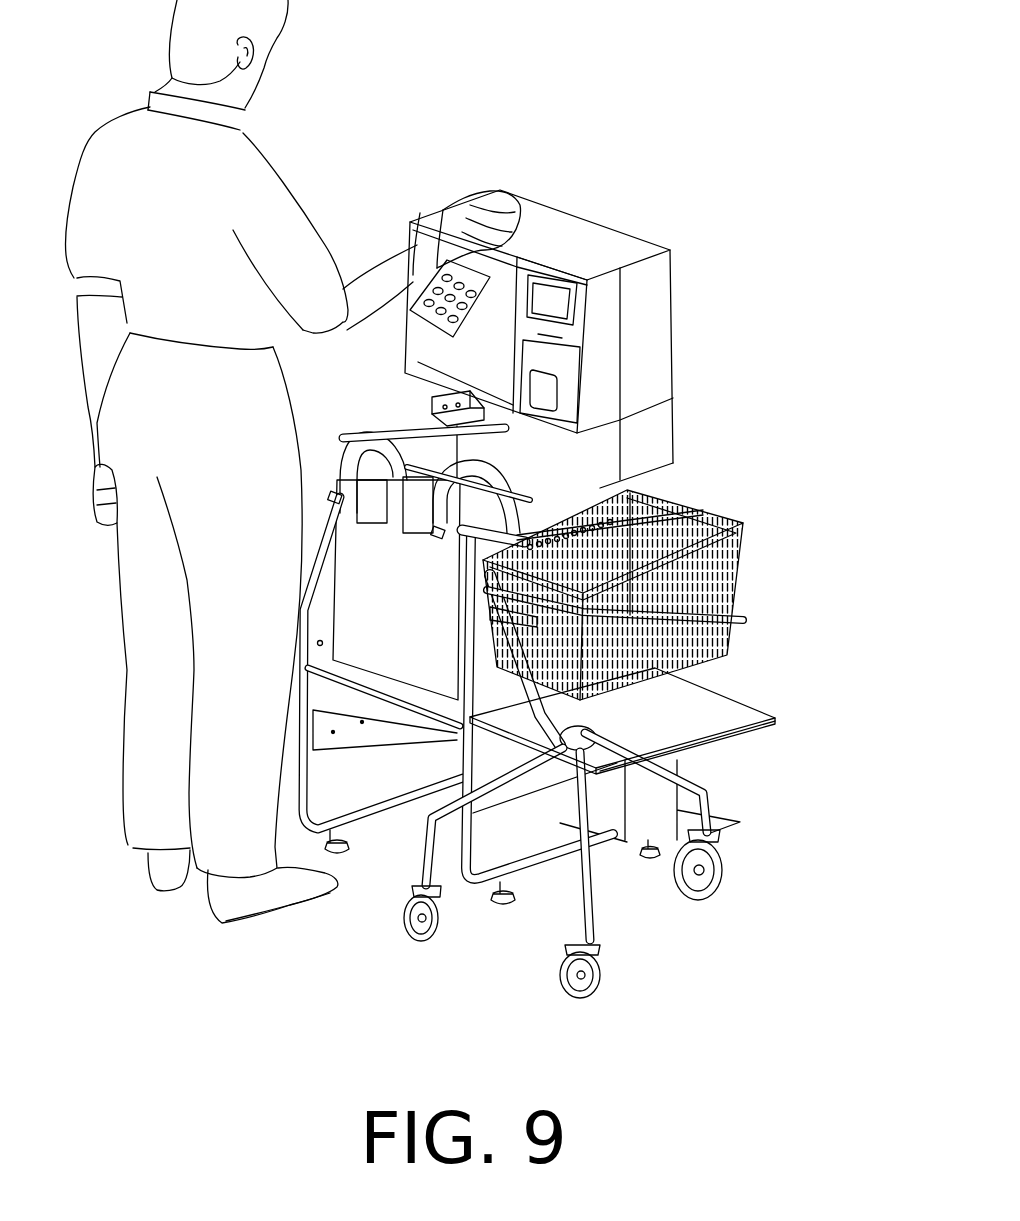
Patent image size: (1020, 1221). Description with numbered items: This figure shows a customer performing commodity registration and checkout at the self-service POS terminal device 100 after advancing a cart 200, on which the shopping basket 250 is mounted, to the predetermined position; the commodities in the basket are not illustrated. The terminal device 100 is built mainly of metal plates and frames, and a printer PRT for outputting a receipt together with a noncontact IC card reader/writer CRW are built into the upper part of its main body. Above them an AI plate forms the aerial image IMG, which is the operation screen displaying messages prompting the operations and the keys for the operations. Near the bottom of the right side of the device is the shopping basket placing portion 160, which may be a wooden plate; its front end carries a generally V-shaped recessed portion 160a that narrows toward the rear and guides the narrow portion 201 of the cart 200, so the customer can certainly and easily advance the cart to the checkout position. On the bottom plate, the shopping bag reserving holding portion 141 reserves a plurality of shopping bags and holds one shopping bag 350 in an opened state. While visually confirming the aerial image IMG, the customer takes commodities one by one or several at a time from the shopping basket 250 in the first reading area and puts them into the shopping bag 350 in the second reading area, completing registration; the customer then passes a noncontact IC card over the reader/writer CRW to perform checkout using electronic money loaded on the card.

The self-service POS terminal device 100 is at (577, 303).
The aerial image IMG is at (514, 252).
The printer PRT is at (632, 306).
The noncontact IC card reader/writer CRW is at (634, 381).
The shopping bag reserving holding portion 141 is at (424, 412).
The cart 200 is at (574, 732).
The shopping basket 250 is at (672, 595).
The shopping basket placing portion 160 is at (658, 721).
The recessed portion 160a is at (697, 782).
The narrow portion 201 is at (563, 874).
The shopping bag 350 is at (426, 664).